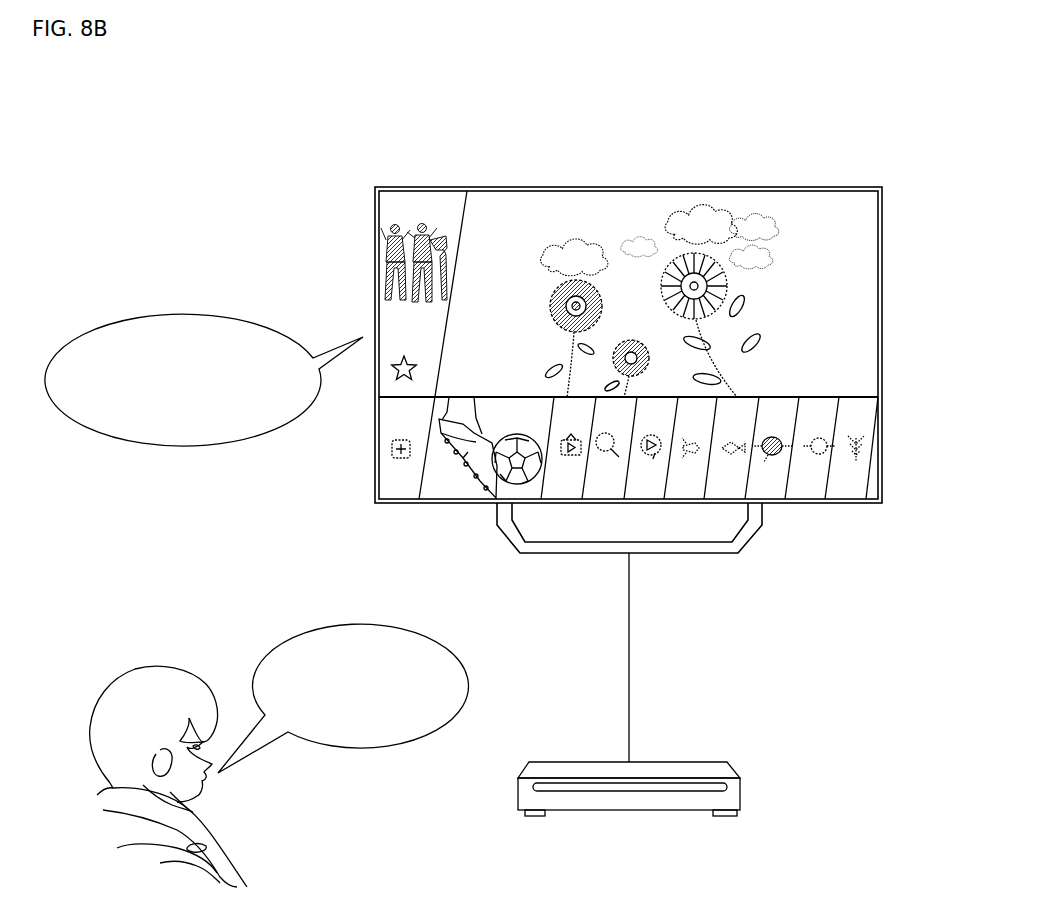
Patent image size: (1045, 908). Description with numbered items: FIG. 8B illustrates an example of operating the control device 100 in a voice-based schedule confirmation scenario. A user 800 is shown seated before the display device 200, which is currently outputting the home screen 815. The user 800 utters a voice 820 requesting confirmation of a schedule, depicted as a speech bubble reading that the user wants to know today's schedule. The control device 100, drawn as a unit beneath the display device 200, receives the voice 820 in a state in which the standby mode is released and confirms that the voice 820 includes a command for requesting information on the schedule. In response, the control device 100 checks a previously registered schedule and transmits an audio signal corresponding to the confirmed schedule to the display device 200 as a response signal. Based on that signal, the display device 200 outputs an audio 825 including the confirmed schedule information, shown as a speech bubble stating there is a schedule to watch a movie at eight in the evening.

The display device 200 is at (789, 187).
The home screen 815 is at (855, 225).
The control device 100 is at (702, 762).
The audio 825 is at (122, 323).
The voice 820 is at (293, 638).
The user 800 is at (110, 678).